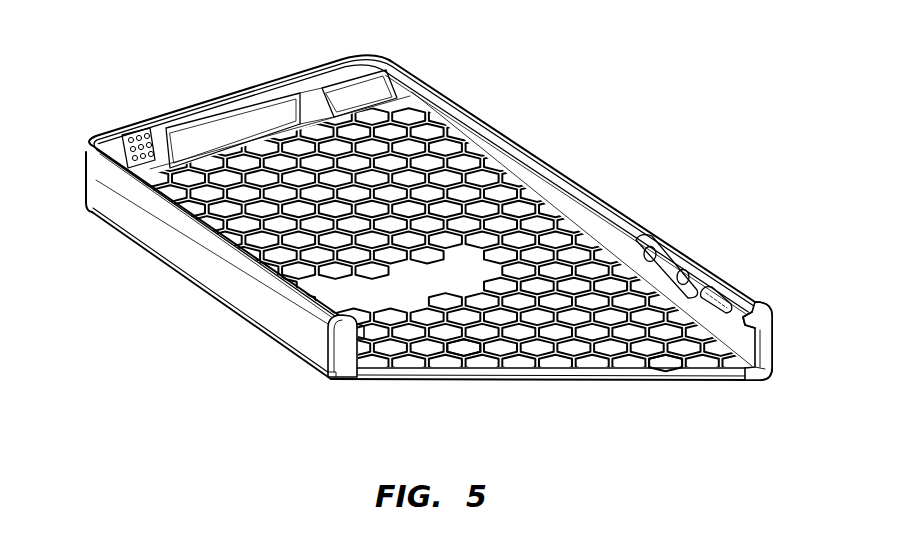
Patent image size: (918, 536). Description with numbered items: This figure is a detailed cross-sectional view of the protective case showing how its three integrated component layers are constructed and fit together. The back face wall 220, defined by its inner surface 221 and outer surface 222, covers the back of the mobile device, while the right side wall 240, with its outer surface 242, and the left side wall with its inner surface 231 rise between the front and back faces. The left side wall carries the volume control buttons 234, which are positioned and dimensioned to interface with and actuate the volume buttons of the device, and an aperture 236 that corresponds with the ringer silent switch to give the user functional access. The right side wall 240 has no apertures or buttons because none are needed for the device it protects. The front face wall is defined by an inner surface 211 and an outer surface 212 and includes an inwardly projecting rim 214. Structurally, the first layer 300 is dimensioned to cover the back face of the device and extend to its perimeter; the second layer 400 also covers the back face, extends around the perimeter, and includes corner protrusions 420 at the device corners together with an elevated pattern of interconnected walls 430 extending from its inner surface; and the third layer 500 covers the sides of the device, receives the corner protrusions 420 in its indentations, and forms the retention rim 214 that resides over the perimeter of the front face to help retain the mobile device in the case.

The inner surface of front face wall 211 is at (362, 340).
The outer surface of front face wall 212 is at (332, 305).
The inwardly projecting rim 214 is at (327, 352).
The back face wall 220 is at (553, 270).
The inner surface of back face wall 221 is at (650, 358).
The outer surface of back face wall 222 is at (515, 381).
The inner surface of left side wall 231 is at (487, 155).
The volume control buttons 234 is at (683, 270).
The ringer silent switch aperture 236 is at (705, 291).
The right side wall 240 is at (140, 222).
The outer surface of right side wall 242 is at (208, 268).
The first layer 300 is at (343, 377).
The second layer 400 is at (382, 371).
The corner protrusions 420 is at (386, 92).
The elevated pattern of interconnected walls 430 is at (460, 358).
The third layer 500 is at (334, 340).